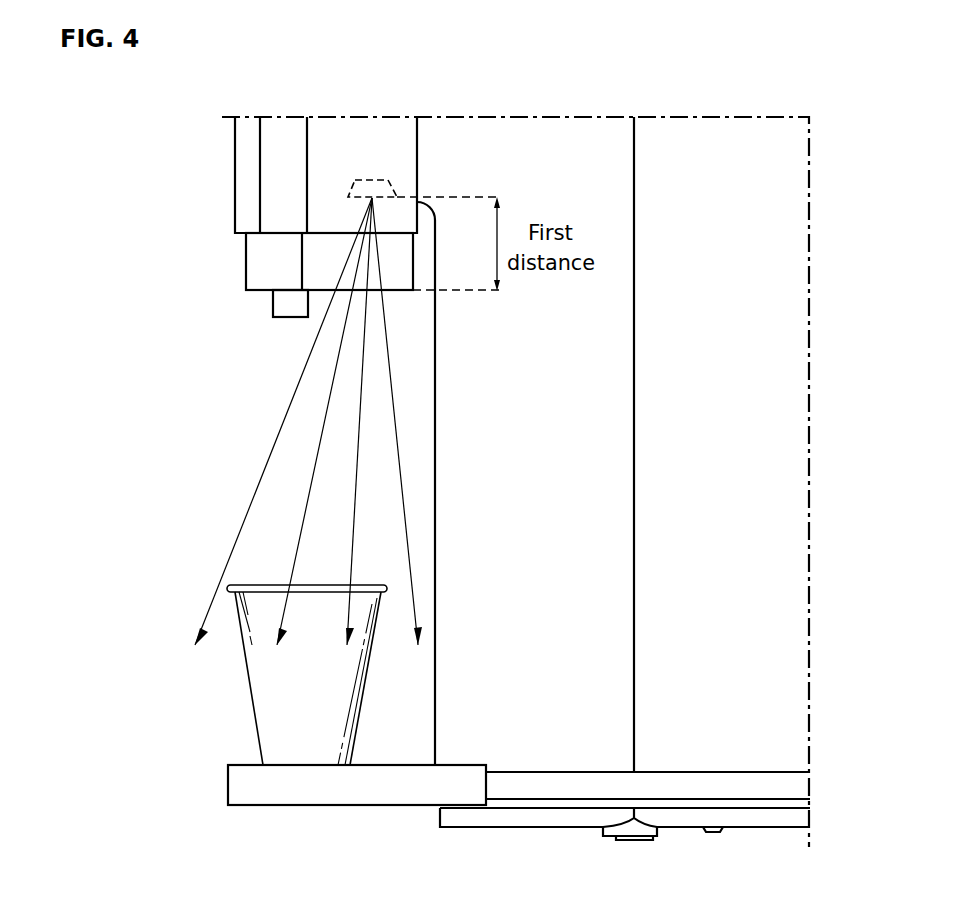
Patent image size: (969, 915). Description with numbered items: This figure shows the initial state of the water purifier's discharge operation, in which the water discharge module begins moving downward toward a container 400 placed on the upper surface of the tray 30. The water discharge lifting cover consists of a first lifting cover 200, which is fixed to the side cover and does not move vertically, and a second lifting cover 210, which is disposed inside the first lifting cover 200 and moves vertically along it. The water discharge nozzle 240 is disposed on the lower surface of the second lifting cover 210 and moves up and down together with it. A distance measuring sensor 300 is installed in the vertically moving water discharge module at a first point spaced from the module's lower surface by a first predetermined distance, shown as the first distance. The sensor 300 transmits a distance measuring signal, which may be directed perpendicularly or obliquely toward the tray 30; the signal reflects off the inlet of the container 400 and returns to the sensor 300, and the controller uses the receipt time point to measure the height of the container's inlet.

The first lifting cover 200 is at (247, 168).
The second lifting cover 210 is at (257, 262).
The water discharge nozzle 240 is at (283, 305).
The distance measuring sensor 300 is at (372, 178).
The container 400 is at (265, 687).
The tray 30 is at (245, 783).